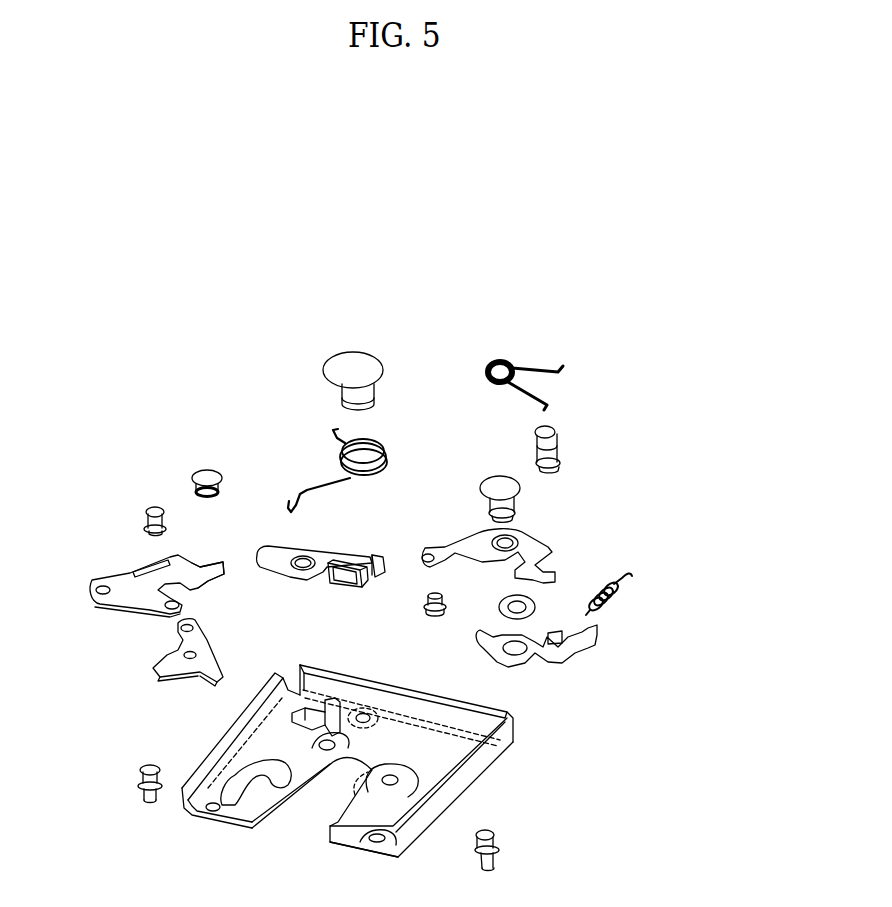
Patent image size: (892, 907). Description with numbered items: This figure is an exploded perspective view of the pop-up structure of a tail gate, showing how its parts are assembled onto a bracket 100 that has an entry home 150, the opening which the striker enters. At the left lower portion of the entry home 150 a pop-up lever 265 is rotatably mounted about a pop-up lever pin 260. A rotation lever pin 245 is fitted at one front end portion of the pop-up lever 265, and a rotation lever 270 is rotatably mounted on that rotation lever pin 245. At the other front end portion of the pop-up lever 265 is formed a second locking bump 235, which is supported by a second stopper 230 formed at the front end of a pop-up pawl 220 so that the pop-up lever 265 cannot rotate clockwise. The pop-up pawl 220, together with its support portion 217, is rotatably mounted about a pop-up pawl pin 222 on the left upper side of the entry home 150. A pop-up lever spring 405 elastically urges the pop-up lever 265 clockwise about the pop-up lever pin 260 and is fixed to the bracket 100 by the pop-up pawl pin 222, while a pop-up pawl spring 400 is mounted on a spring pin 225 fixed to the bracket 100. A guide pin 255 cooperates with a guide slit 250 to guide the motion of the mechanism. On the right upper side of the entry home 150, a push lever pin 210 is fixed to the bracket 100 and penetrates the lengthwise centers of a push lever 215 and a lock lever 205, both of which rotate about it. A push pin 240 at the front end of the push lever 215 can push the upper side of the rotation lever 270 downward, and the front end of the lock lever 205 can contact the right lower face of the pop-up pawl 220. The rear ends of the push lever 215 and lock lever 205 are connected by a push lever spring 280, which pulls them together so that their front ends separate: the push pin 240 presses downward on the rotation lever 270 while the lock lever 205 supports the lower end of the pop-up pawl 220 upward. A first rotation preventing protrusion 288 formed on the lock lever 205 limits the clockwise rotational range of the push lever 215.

The bracket 100 is at (480, 772).
The entry home 150 is at (327, 825).
The lock lever 205 is at (578, 652).
The push lever pin 210 is at (510, 488).
The push lever 215 is at (542, 545).
The support portion 217 is at (342, 578).
The pop-up pawl 220 is at (360, 554).
The pop-up pawl pin 222 is at (353, 360).
The spring pin 225 is at (553, 428).
The second stopper 230 is at (272, 550).
The second locking bump 235 is at (222, 576).
The push pin 240 is at (435, 617).
The rotation lever pin 245 is at (152, 506).
The guide slit 250 is at (247, 768).
The guide pin 255 is at (207, 470).
The pop-up lever pin 260 is at (138, 768).
The pop-up lever 265 is at (117, 580).
The rotation lever 270 is at (160, 658).
The push lever spring 280 is at (617, 605).
The first rotation prevention protrusion 288 is at (552, 640).
The pop-up pawl spring 400 is at (500, 362).
The pop-up lever spring 405 is at (383, 447).